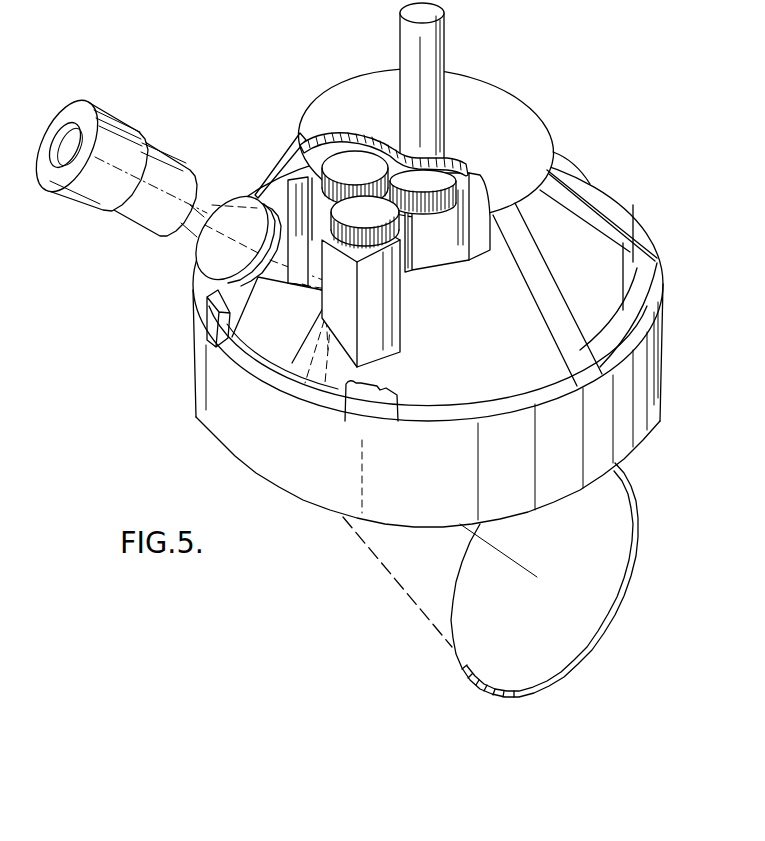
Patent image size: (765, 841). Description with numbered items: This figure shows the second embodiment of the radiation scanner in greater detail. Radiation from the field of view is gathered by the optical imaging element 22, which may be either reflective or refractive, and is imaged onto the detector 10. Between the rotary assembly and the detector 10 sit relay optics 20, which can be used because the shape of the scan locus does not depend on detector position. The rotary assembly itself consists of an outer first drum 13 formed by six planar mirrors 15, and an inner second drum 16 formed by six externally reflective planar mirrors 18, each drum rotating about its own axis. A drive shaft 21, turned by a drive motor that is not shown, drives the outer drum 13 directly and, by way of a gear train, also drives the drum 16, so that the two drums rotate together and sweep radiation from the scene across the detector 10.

The detector 10 is at (82, 187).
The first drum 13 is at (228, 417).
The planar mirrors 15 is at (442, 402).
The second drum 16 is at (410, 227).
The externally reflective planar mirrors 18 is at (383, 280).
The relay optics 20 is at (240, 186).
The drive shaft 21 is at (447, 33).
The optical imaging element 22 is at (637, 506).